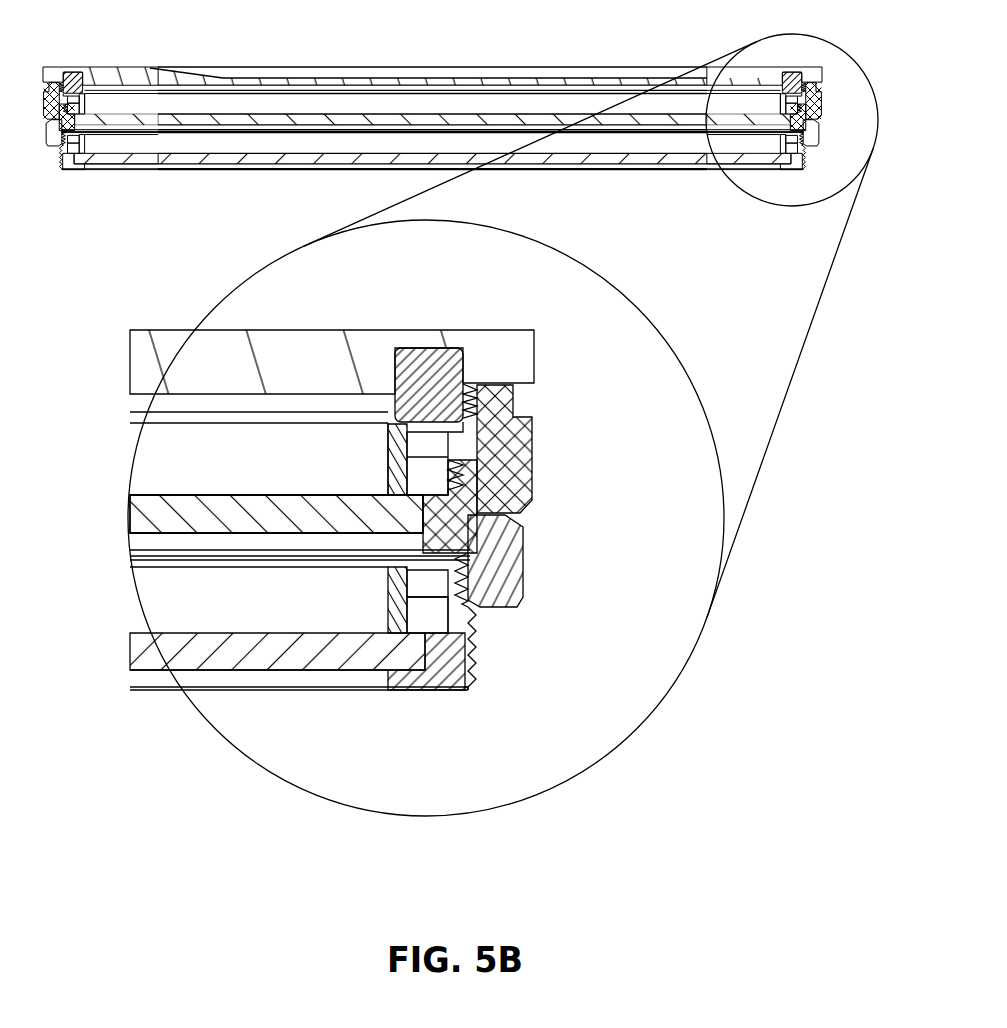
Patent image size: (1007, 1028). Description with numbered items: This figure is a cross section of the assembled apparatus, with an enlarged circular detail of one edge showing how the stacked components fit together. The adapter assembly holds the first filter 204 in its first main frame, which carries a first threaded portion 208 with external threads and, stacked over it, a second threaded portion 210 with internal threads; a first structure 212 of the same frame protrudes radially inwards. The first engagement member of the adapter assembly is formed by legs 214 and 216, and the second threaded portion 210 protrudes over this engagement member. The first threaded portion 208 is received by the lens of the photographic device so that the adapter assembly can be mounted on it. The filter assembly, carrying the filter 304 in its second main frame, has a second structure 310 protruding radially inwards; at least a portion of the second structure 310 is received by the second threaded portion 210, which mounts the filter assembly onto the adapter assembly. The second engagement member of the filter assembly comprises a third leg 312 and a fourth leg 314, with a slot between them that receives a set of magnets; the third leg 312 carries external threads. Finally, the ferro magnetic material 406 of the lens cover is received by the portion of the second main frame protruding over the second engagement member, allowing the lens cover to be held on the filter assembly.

The first filter 204 is at (218, 670).
The first threaded portion 208 is at (478, 664).
The second threaded portion 210 is at (468, 553).
The first structure 212 is at (400, 688).
The leg 214 is at (450, 590).
The leg 216 is at (462, 686).
The filter 304 is at (193, 535).
The second structure 310 is at (470, 423).
The third leg 312 is at (530, 500).
The fourth leg 314 is at (475, 517).
The ferro magnetic material 406 is at (395, 400).